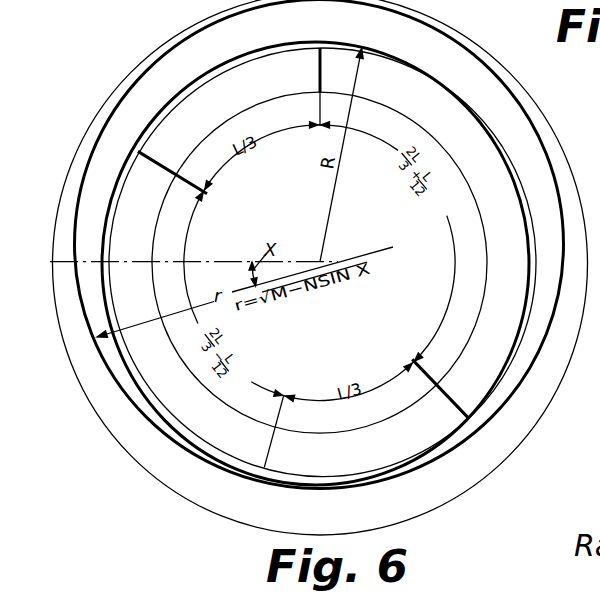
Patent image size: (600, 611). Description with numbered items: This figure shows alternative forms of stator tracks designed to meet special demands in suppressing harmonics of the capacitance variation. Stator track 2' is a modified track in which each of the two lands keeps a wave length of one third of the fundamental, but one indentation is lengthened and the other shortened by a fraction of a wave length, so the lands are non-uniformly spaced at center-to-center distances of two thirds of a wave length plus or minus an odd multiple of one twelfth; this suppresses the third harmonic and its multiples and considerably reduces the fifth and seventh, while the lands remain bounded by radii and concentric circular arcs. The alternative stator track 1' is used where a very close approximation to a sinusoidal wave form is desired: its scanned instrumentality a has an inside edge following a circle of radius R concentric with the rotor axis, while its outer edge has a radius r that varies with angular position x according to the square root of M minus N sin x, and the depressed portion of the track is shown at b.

The alternative stator track 1' is at (320, 267).
The stator track 2' is at (319, 263).
The scanned instrumentality a is at (312, 228).
The depressed portion of the track b is at (318, 285).